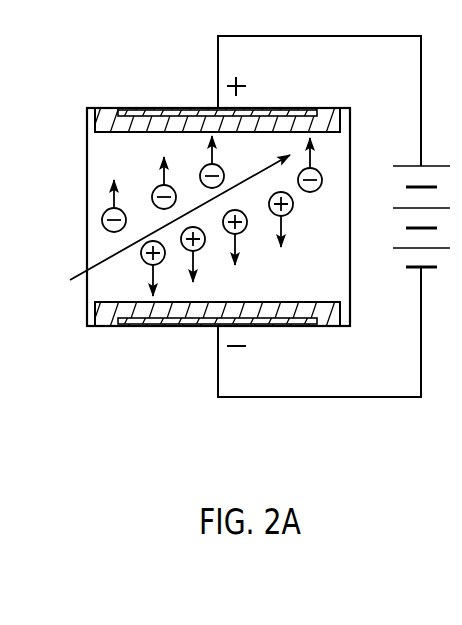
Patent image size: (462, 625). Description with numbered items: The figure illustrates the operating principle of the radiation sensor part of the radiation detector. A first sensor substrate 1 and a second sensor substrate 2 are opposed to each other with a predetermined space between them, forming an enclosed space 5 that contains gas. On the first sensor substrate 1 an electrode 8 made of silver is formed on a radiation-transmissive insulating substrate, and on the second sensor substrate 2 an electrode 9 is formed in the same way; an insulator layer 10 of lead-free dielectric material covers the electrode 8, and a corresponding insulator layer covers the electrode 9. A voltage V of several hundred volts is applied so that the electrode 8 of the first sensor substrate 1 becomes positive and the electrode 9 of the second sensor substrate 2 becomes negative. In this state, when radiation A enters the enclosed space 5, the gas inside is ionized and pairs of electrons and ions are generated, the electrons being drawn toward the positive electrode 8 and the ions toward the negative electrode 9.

The first sensor substrate 1 is at (144, 80).
The second sensor substrate 2 is at (142, 352).
The enclosed space 5 is at (98, 157).
The electrode 8 is at (292, 110).
The electrode 9 is at (278, 324).
The insulator layer 10 is at (328, 121).
The radiation A is at (82, 274).
The voltage V is at (334, 216).